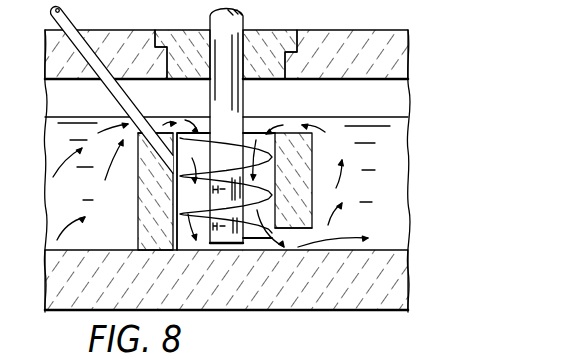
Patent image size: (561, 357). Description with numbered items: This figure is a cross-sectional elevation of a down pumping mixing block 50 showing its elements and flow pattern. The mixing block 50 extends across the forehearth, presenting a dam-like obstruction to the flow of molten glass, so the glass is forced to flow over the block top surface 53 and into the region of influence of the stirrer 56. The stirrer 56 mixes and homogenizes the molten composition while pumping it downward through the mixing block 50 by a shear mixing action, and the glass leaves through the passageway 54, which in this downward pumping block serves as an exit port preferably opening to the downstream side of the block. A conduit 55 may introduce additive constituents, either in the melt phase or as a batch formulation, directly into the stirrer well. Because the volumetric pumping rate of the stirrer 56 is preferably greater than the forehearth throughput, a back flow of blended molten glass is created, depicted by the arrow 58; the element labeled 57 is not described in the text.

The mixing block 50 is at (137, 230).
The block top surface 53 is at (171, 100).
The passageway 54 is at (295, 240).
The conduit 55 is at (66, 15).
The stirrer 56 is at (256, 138).
The housing body 57 is at (405, 107).
The arrow 58 is at (321, 140).